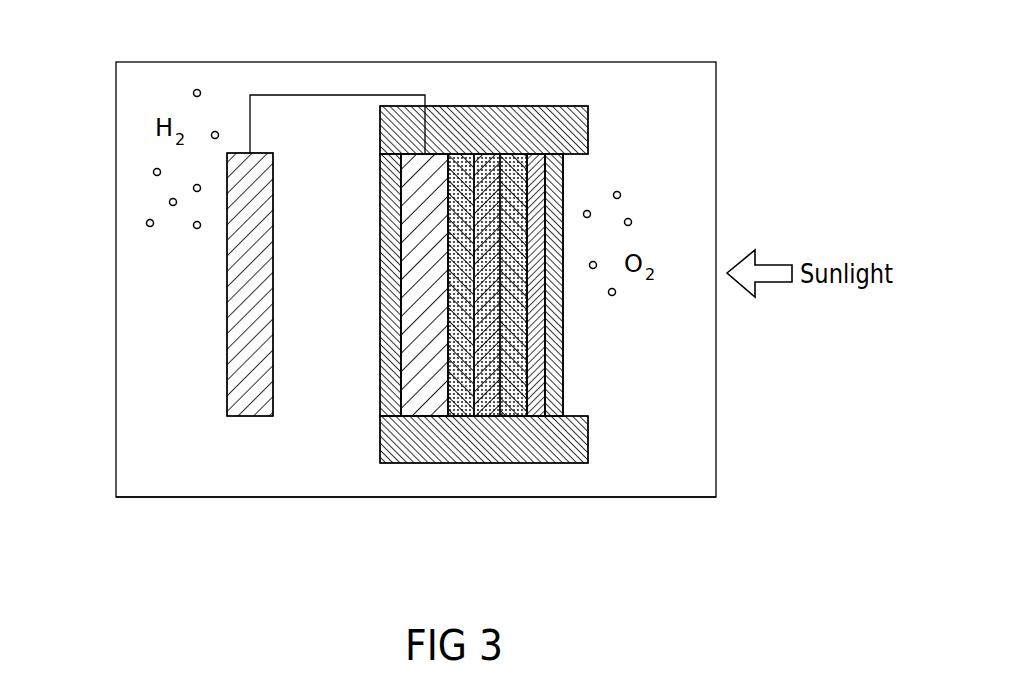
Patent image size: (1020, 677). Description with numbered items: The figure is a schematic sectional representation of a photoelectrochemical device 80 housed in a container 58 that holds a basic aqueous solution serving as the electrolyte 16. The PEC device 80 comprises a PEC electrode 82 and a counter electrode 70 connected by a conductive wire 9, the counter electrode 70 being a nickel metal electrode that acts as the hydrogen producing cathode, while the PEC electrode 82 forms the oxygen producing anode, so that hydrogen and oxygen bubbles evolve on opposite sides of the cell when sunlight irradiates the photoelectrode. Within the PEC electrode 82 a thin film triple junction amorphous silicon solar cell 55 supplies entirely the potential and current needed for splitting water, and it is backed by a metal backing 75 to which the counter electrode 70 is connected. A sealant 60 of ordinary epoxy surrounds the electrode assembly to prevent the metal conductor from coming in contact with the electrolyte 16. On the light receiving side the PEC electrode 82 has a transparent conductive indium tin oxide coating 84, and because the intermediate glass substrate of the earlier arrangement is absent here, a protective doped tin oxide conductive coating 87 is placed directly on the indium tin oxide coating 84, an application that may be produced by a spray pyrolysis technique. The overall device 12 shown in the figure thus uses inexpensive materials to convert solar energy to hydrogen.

The conductive wire 9 is at (325, 94).
The photoelectrochemical device 12 is at (590, 483).
The electrolyte 16 is at (341, 295).
The thin film triple junction amorphous silicon solar cell 55 is at (512, 405).
The container 58 is at (116, 165).
The sealant 60 is at (380, 452).
The counter electrode 70 is at (227, 333).
The metal backing 75 is at (427, 403).
The photoelectrochemical (PEC) device 80 is at (770, 112).
The PEC electrode 82 is at (580, 398).
The transparent conductive indium tin oxide coating 84 is at (535, 156).
The protective doped tin oxide conductive coating 87 is at (552, 155).